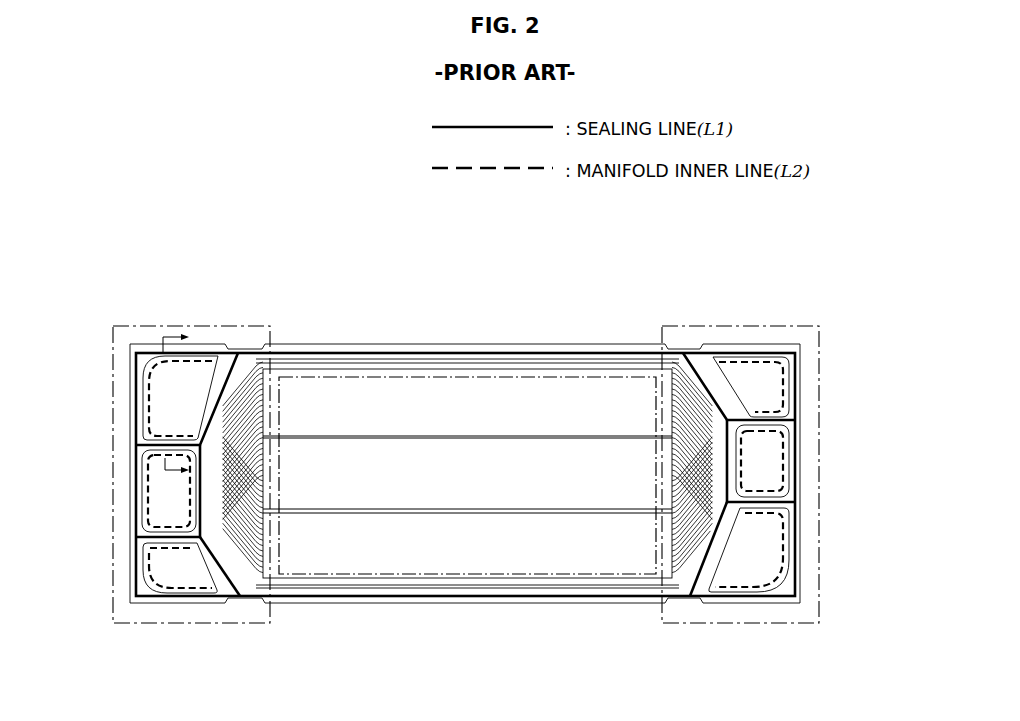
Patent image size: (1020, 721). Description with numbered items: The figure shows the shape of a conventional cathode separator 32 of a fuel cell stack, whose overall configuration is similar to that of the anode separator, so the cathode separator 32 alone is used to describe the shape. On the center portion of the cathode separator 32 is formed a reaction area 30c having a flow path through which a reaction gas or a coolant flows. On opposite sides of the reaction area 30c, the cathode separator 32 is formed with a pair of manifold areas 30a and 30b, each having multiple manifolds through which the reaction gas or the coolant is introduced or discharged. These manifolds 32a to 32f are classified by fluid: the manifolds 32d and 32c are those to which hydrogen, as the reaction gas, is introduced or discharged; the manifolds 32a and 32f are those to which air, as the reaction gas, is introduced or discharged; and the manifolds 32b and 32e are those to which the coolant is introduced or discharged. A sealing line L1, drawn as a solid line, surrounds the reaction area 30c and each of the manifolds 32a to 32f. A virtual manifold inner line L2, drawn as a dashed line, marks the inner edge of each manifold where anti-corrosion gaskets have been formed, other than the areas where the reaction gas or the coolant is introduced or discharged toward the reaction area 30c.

The cathode separator 32 is at (460, 423).
The air inlet manifold 32a is at (150, 401).
The coolant outlet manifold 32b is at (150, 474).
The hydrogen outlet manifold 32c is at (150, 556).
The hydrogen inlet manifold 32d is at (786, 343).
The coolant inlet manifold 32e is at (779, 471).
The air outlet manifold 32f is at (779, 542).
The manifold area 30a is at (190, 627).
The manifold area 30b is at (740, 627).
The reaction area 30c is at (495, 576).
The sealing line L1 is at (392, 353).
The manifold inner line L2 is at (747, 361).